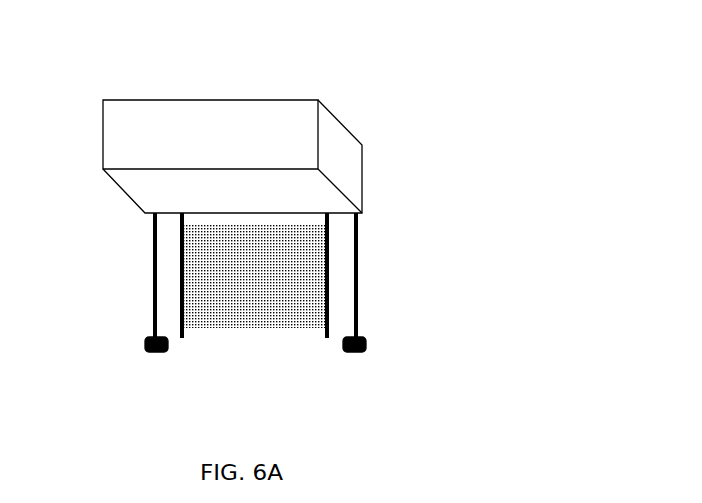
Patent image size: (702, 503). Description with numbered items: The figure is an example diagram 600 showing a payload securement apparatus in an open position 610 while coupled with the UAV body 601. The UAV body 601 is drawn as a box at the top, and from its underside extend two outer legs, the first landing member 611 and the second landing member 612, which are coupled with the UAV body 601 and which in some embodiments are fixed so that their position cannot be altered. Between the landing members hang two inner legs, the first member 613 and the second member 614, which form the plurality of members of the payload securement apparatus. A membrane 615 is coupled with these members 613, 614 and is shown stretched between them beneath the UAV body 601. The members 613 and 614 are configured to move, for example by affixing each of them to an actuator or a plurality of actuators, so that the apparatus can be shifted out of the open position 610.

The example diagram 600 is at (447, 77).
The UAV body 601 is at (362, 146).
The open position 610 is at (256, 329).
The first landing member 611 is at (114, 275).
The second landing member 612 is at (397, 275).
The first member 613 is at (153, 384).
The second member 614 is at (356, 371).
The membrane 615 is at (254, 298).